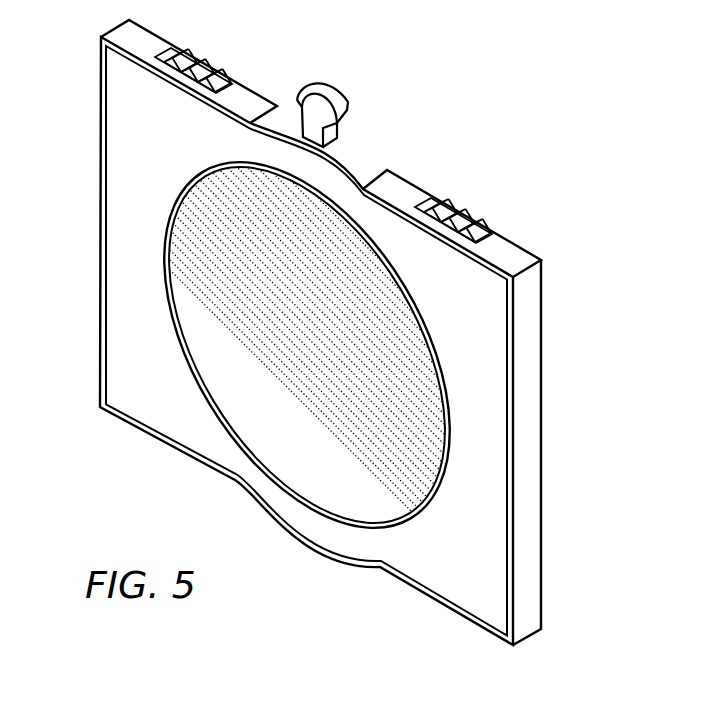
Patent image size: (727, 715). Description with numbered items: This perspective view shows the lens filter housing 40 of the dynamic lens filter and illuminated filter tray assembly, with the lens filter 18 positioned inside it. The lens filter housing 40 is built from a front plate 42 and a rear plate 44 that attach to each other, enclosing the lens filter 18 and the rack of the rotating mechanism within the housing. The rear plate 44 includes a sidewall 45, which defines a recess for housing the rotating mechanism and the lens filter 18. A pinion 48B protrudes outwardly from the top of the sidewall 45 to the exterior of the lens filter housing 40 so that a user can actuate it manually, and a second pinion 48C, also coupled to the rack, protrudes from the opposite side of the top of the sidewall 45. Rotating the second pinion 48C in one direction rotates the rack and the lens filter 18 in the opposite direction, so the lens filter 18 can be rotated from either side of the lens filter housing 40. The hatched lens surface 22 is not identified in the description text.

The lens filter housing 40 is at (363, 350).
The front plate 42 is at (126, 127).
The rear plate 44 is at (523, 240).
The sidewall 45 is at (530, 384).
The pinion 48B is at (196, 52).
The second pinion 48C is at (455, 202).
The lens filter 18 is at (190, 229).
The lens surface 22 is at (368, 480).